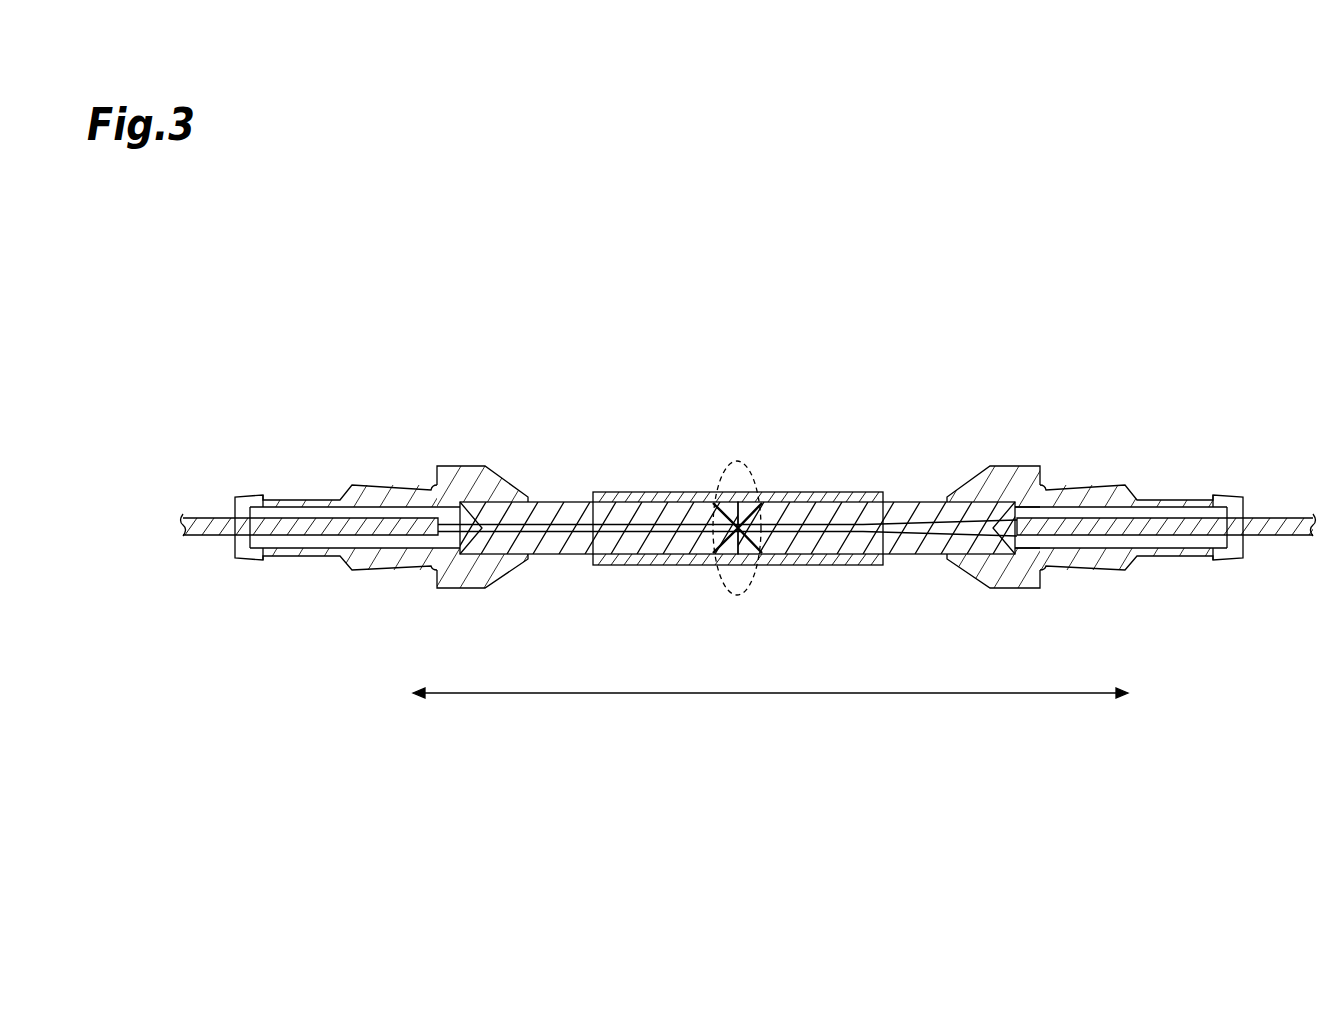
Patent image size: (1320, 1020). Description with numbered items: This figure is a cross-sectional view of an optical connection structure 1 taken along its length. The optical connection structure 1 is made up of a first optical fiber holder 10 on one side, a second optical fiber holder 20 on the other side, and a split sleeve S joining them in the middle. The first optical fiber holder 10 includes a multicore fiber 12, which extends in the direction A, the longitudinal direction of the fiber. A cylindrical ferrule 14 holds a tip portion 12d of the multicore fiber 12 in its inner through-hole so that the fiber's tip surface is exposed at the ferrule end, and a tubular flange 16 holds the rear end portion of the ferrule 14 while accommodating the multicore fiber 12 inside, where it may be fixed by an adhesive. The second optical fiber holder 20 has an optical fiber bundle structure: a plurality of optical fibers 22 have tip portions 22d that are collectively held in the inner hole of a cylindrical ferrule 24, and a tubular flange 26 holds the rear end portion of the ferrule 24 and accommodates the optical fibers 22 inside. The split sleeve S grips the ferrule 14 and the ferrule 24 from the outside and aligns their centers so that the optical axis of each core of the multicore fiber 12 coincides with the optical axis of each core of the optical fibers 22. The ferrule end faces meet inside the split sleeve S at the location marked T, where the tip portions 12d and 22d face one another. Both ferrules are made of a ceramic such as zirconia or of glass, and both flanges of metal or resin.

The optical connection structure 1 is at (1097, 316).
The first optical fiber holder 10 is at (460, 465).
The multicore fiber 12 is at (206, 518).
The tip portion of the MCF 12d is at (637, 530).
The ferrule 14 is at (561, 501).
The flange 16 is at (392, 486).
The second optical fiber holder 20 is at (1012, 465).
The optical fibers 22 is at (1273, 517).
The tip portions of the optical fibers 22d is at (805, 530).
The ferrule 24 is at (920, 500).
The flange 26 is at (1093, 486).
The split sleeve S is at (680, 491).
The connection point of optical fibers T is at (733, 462).
The direction A is at (830, 694).